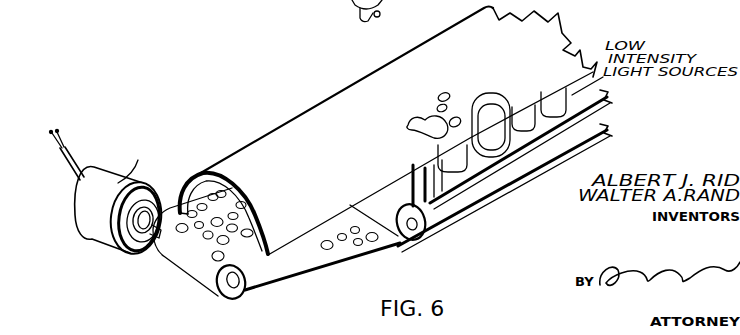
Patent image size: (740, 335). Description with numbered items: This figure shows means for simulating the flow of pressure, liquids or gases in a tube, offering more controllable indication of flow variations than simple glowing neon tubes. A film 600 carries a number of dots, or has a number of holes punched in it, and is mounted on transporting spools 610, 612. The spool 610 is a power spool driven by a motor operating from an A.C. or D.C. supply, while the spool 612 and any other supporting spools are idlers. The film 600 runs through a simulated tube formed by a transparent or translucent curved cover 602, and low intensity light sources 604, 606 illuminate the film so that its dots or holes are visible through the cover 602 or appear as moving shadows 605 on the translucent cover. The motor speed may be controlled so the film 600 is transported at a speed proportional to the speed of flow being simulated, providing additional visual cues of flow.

The film 600 is at (162, 256).
The transparent cover 602 is at (396, 127).
The low intensity light source 604 is at (461, 172).
The moving shadows 605 is at (423, 117).
The low intensity light source 606 is at (481, 152).
The power spool 610 is at (259, 285).
The idler spool 612 is at (406, 241).